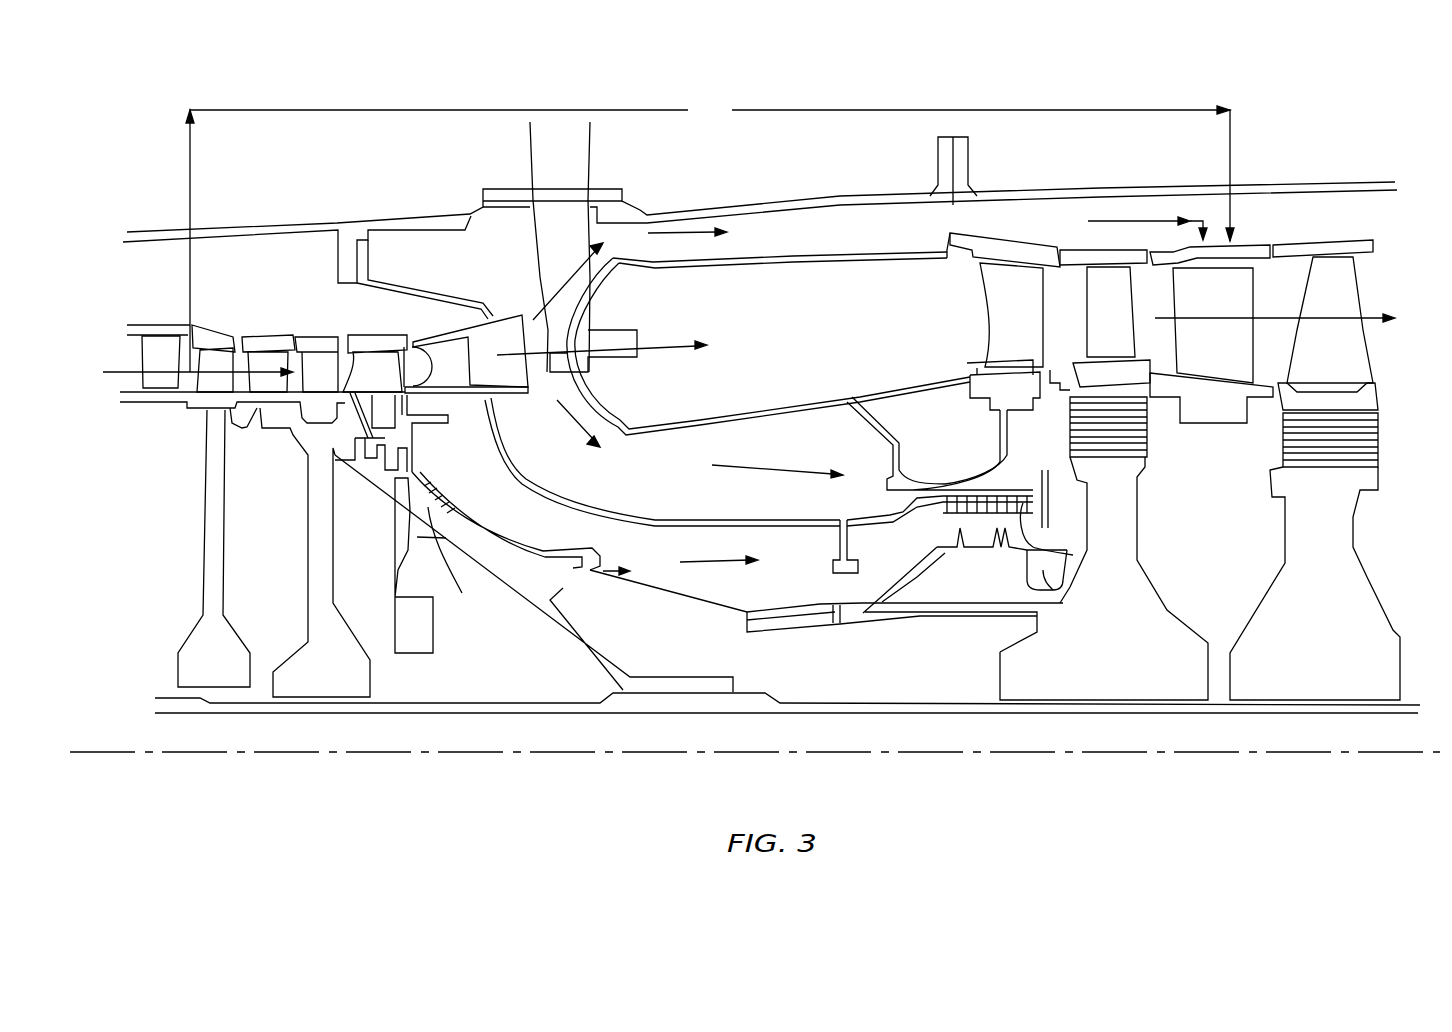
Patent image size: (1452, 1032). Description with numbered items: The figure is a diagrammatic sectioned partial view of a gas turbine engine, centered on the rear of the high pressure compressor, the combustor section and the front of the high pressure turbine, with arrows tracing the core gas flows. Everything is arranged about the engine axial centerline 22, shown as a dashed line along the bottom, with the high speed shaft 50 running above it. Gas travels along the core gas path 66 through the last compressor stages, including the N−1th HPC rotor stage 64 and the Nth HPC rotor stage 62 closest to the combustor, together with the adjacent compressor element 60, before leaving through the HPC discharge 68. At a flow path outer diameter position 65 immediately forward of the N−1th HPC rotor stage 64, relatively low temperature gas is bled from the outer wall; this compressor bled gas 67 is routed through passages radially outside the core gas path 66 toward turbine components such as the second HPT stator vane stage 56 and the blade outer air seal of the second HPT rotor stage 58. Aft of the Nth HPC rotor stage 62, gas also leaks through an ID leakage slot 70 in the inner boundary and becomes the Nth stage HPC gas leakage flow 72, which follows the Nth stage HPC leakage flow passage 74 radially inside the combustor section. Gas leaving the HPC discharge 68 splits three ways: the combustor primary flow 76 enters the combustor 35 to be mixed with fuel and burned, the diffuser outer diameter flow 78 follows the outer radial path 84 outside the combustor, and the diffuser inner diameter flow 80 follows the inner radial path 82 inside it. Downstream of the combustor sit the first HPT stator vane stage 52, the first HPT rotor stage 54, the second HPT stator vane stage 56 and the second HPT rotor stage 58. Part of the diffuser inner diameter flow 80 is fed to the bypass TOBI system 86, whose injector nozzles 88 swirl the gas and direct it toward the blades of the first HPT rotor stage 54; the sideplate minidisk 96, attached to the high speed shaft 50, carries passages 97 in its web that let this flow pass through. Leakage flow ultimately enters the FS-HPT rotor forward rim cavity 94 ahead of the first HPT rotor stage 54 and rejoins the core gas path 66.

The axial centerline 22 is at (80, 752).
The combustor 35 is at (870, 250).
The high speed shaft 50 is at (797, 630).
The first HPT stator vane stage 52 is at (1017, 244).
The first HPT rotor stage 54 is at (1115, 673).
The second HPT stator vane stage 56 is at (1240, 237).
The second HPT rotor stage 58 is at (1331, 663).
The compressor rotor blade 60 is at (377, 353).
The Nth HPC rotor stage 62 is at (340, 676).
The N−1th HPC rotor stage 64 is at (230, 671).
The flow path outer diameter position 65 is at (195, 330).
The core gas path 66 is at (110, 373).
The compressor bled gas 67 is at (1290, 118).
The HPC discharge 68 is at (533, 397).
The ID leakage slot 70 is at (350, 355).
The Nth stage HPC gas leakage flow 72 is at (572, 566).
The Nth stage HPC leakage flow passage 74 is at (788, 596).
The combustor primary flow 76 is at (667, 348).
The diffuser outer diameter flow 78 is at (692, 230).
The diffuser inner diameter flow 80 is at (742, 465).
The inner radial path 82 is at (735, 504).
The outer radial path 84 is at (818, 243).
The bypass TOBI system 86 is at (958, 448).
The injector nozzles 88 is at (1073, 555).
The FS-HPT rotor forward rim cavity 94 is at (1057, 383).
The sideplate minidisk 96 is at (1043, 570).
The passages 97 is at (1057, 530).